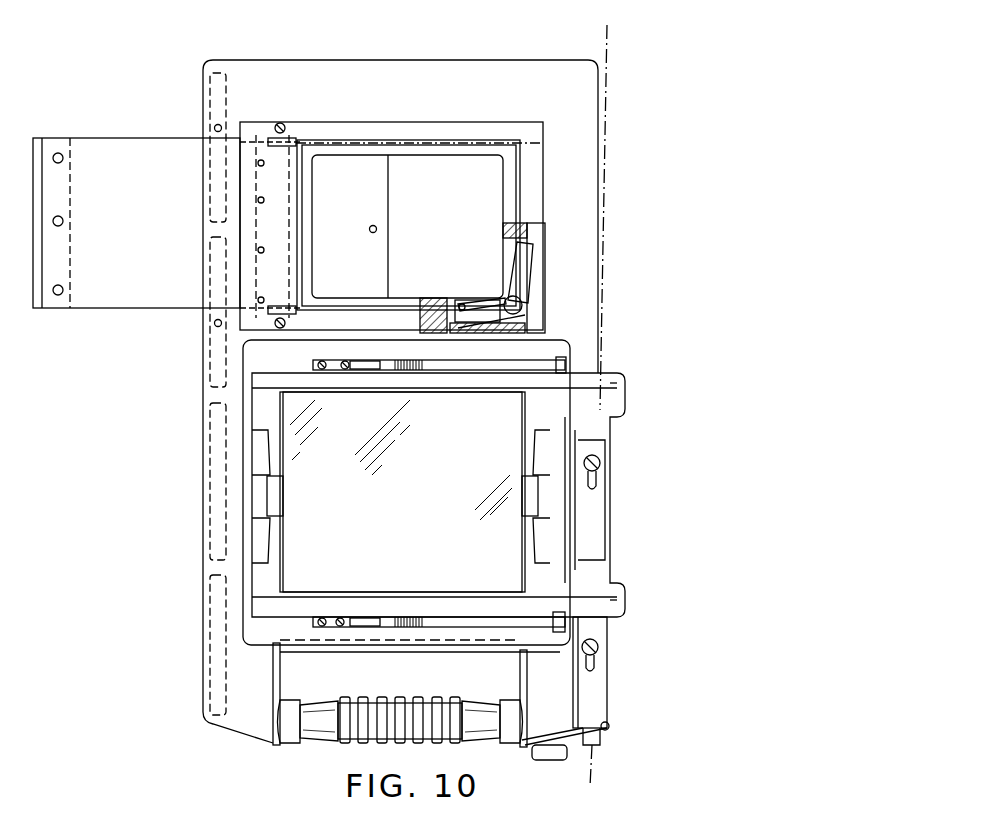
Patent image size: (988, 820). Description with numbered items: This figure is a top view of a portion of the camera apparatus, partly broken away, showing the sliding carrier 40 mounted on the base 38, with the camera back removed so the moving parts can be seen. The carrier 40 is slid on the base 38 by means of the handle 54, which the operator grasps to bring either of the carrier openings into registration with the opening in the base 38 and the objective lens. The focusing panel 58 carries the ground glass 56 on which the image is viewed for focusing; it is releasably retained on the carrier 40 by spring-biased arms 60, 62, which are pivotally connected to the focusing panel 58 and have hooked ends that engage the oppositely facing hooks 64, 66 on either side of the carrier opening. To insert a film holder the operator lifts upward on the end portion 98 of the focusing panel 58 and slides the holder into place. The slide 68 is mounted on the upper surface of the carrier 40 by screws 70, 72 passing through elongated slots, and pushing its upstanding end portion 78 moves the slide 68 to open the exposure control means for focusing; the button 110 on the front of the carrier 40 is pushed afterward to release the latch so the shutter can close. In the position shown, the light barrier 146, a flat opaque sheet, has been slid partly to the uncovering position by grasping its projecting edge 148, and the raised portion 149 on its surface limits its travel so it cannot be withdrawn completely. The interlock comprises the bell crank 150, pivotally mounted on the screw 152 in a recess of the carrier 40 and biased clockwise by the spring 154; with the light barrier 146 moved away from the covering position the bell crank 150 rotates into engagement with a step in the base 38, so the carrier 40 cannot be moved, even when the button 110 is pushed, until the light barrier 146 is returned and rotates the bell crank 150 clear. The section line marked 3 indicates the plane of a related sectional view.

The section line 3- 3 is at (565, 27).
The carrier 40 is at (592, 203).
The projecting edge 148 is at (36, 138).
The base 38 is at (545, 232).
The light barrier 146 is at (370, 273).
The raised portion 149 is at (369, 229).
The bell crank 150 is at (527, 252).
The screw 152 is at (522, 308).
The spring 154 is at (505, 300).
The focusing panel 58 is at (566, 417).
The end portion 98 is at (612, 398).
The ground glass 56 is at (416, 492).
The spring-biased arm 62 is at (515, 368).
The hook 66 is at (354, 362).
The hook 64 is at (367, 618).
The spring-biased arm 60 is at (486, 625).
The handle 54 is at (345, 742).
The slide 68 is at (595, 697).
The screw 70 is at (600, 645).
The screw 72 is at (603, 468).
The upstanding end portion 78 is at (609, 726).
The button 110 is at (540, 753).